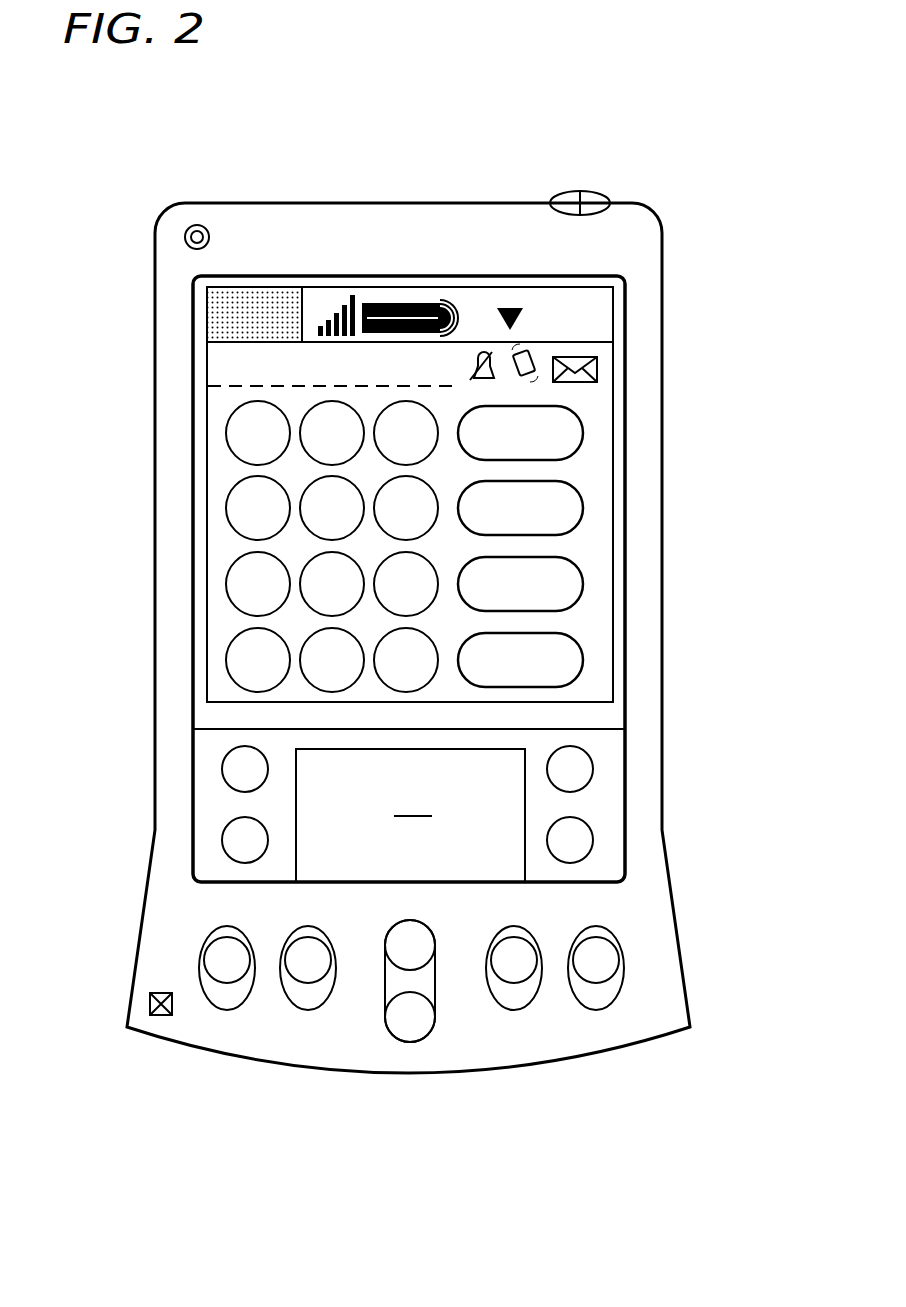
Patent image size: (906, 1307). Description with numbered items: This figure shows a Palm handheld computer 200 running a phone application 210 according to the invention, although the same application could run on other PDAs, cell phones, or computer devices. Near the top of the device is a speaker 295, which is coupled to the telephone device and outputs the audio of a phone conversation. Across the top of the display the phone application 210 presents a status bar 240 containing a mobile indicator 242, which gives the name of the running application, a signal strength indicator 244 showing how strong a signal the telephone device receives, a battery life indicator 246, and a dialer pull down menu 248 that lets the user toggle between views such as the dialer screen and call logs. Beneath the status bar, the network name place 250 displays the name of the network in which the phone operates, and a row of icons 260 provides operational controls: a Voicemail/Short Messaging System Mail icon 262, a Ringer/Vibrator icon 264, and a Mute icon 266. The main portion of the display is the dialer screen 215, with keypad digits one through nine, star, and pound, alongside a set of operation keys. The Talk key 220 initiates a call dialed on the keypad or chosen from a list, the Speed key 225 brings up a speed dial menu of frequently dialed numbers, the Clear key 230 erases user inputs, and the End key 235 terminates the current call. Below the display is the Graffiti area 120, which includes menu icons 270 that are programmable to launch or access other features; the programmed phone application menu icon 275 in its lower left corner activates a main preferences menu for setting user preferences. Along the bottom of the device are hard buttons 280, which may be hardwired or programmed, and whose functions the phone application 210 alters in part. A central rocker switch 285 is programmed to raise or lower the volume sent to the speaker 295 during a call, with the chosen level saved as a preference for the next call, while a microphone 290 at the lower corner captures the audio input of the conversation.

The Palm handheld computer 200 is at (698, 170).
The speakers 295 is at (186, 231).
The status bar 240 is at (207, 300).
The mobile indicator 242 is at (258, 292).
The signal strength indicator 244 is at (333, 295).
The battery life indicator 246 is at (420, 303).
The dialer pull down menu 248 is at (514, 313).
The network name place 250 is at (240, 362).
The icons 260 is at (612, 350).
The Voicemail/Short Messaging System Mail icon 262 is at (597, 372).
The Ringer/Vibrator icon 264 is at (530, 356).
The Mute icon 266 is at (484, 352).
The phone application 210 is at (262, 546).
The dialer screen 215 is at (228, 433).
The Talk key 220 is at (583, 435).
The Speed key 225 is at (583, 510).
The Clear key 230 is at (583, 585).
The End key 235 is at (583, 660).
The Graffiti area 120 is at (410, 815).
The menu icons 270 is at (222, 768).
The phone application menu icon 275 is at (222, 838).
The hard buttons 280 is at (628, 957).
The rocker switch 285 is at (409, 1027).
The microphone 290 is at (161, 1015).